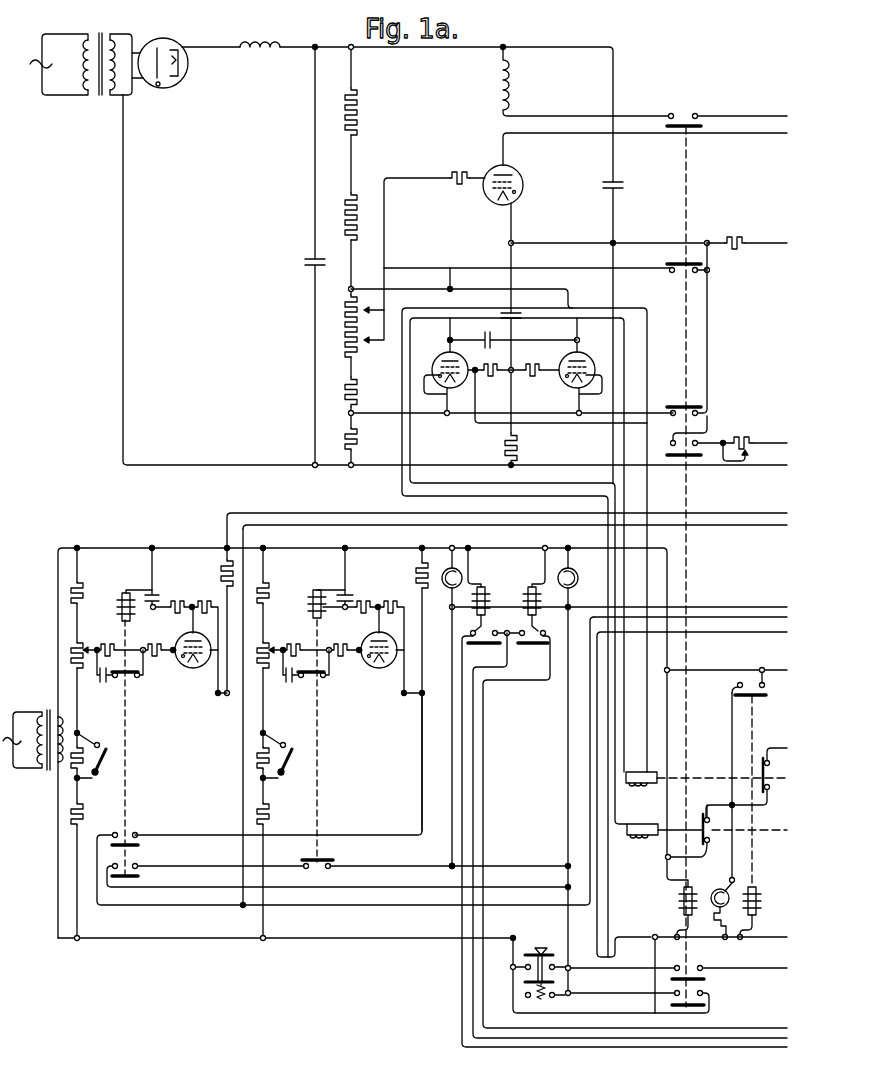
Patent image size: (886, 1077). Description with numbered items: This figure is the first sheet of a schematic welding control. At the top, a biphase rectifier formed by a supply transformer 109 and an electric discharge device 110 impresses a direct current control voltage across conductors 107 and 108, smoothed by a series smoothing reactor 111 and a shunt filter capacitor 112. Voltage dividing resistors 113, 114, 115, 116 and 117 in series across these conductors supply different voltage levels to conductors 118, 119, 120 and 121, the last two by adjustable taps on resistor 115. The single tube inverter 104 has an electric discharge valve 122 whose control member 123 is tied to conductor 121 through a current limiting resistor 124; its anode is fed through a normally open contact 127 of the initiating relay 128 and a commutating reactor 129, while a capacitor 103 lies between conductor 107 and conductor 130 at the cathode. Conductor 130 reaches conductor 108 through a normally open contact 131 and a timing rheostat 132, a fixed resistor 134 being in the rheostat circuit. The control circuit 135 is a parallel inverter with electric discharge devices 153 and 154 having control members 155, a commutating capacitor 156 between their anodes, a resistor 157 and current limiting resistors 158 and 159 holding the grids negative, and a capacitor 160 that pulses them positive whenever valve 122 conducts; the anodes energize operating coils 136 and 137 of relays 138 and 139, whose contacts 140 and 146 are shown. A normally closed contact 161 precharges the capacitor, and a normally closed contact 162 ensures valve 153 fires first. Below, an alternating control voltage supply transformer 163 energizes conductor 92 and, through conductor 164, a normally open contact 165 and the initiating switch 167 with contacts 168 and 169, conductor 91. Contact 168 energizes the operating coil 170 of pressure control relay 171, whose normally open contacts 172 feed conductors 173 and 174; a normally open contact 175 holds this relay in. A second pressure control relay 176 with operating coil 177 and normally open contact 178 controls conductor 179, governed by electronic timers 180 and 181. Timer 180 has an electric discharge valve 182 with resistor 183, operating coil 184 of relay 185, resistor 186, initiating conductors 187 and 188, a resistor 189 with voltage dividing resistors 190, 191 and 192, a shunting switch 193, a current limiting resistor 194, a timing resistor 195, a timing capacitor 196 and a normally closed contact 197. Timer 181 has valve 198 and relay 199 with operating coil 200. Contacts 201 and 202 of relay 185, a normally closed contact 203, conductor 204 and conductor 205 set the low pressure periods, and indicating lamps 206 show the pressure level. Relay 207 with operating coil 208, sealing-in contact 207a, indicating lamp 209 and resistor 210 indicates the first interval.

The alternating current supply conductor 91 is at (780, 940).
The alternating current supply conductor 92 is at (383, 546).
The capacitor 103 is at (625, 185).
The single tube inverter 104 is at (471, 152).
The conductor 107 is at (338, 45).
The conductor 108 is at (371, 469).
The supply transformer 109 is at (102, 97).
The electric discharge device 110 is at (172, 88).
The series smoothing reactor 111 is at (264, 53).
The shunt filter capacitor 112 is at (304, 262).
The voltage dividing resistor 113 is at (360, 111).
The voltage dividing resistor 114 is at (357, 224).
The voltage dividing resistor 115 is at (346, 326).
The voltage dividing resistor 116 is at (346, 396).
The voltage dividing resistor 117 is at (360, 440).
The conductor 118 is at (360, 288).
The conductor 119 is at (379, 413).
The conductor 120 is at (409, 268).
The conductor 121 is at (387, 295).
The electric discharge valve 122 is at (515, 195).
The control member 123 is at (510, 167).
The current limiting resistor 124 is at (460, 191).
The normally open contact 127 is at (672, 113).
The initiating relay 128 is at (688, 563).
The commutating reactor 129 is at (512, 85).
The conductor 130 is at (641, 243).
The normally open contact 131 is at (670, 441).
The timing rheostat 132 is at (747, 439).
The fixed resistor 134 is at (738, 236).
The control circuit 135 is at (621, 298).
The operating coil 136 is at (640, 841).
The operating coil 137 is at (634, 770).
The relay 138 is at (749, 843).
The relay 139 is at (704, 774).
The normally closed contact 140 is at (709, 844).
The contact 146 is at (769, 791).
The electric discharge device 153 is at (444, 355).
The electric discharge device 154 is at (585, 356).
The control member 155 is at (556, 386).
The commutating capacitor 156 is at (484, 338).
The resistor 157 is at (512, 447).
The current limiting resistor 158 is at (490, 378).
The current limiting resistor 159 is at (531, 378).
The capacitor 160 is at (513, 316).
The normally closed contact 161 is at (670, 274).
The normally closed contact 162 is at (702, 409).
The alternating control voltage supply transformer 163 is at (57, 706).
The conductor 164 is at (298, 940).
The normally open contact 165 is at (705, 972).
The initiating switch 167 is at (538, 947).
The contact 168 is at (556, 966).
The contact 169 is at (556, 994).
The operating coil 170 is at (528, 592).
The pressure control relay 171 is at (547, 629).
The normally open contacts 172 is at (508, 655).
The conductor 173 is at (765, 1027).
The conductor 174 is at (740, 1037).
The normally open contact 175 is at (705, 995).
The second pressure control relay 176 is at (494, 632).
The operating coil 177 is at (496, 580).
The normally open contact 178 is at (471, 632).
The conductor 179 is at (770, 1048).
The electronic timer 180 is at (195, 751).
The electronic timer 181 is at (377, 751).
The electric discharge valve 182 is at (181, 641).
The resistor 183 is at (179, 603).
The operating coil 184 is at (120, 613).
The relay 185 is at (128, 714).
The resistor 186 is at (222, 570).
The conductor 187 is at (358, 906).
The conductor 188 is at (744, 607).
The resistor 189 is at (84, 672).
The voltage dividing resistor 190 is at (85, 590).
The range resistor 191 is at (86, 743).
The voltage dividing resistor 192 is at (83, 812).
The shunting switch 193 is at (103, 773).
The current limiting resistor 194 is at (156, 658).
The timing resistor 195 is at (107, 648).
The timing capacitor 196 is at (103, 684).
The normally closed contact 197 is at (134, 681).
The electric discharge valve 198 is at (367, 641).
The relay 199 is at (320, 720).
The operating coil 200 is at (317, 590).
The normally open contact 201 is at (138, 835).
The normally open contact 202 is at (138, 866).
The normally closed contact 203 is at (327, 870).
The conductor 204 is at (296, 888).
The conductor 205 is at (765, 619).
The indicating lamp 206 is at (447, 589).
The relay 207 is at (752, 877).
The sealing-in contact 207a is at (761, 694).
The operating coil 208 is at (758, 906).
The indicating lamp 209 is at (719, 905).
The resistor 210 is at (715, 929).